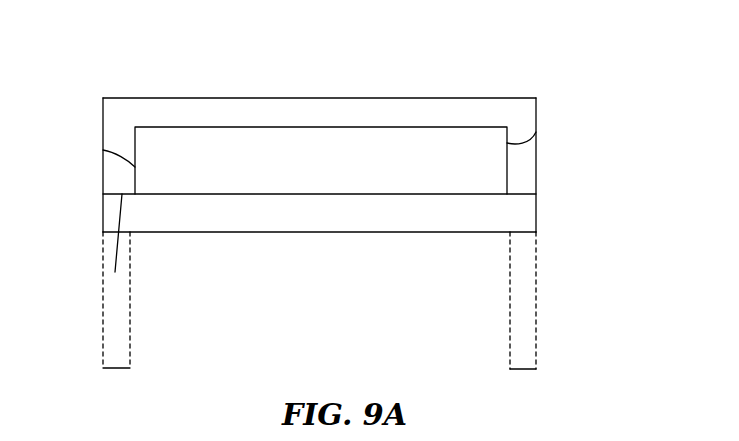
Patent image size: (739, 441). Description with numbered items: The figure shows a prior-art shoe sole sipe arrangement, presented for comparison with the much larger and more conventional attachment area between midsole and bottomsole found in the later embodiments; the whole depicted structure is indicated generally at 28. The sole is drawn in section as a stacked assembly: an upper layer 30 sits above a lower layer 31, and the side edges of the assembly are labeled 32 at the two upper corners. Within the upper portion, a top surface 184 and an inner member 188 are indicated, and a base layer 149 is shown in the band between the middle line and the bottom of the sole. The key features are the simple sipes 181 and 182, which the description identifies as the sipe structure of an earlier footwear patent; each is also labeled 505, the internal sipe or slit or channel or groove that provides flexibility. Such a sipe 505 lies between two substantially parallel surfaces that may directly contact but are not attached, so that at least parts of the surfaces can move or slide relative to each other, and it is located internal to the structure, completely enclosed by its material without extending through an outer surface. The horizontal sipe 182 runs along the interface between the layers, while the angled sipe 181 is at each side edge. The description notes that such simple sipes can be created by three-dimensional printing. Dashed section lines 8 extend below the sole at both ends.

The panel assembly 28 is at (574, 158).
The upper layer 30 is at (290, 98).
The lower layer 31 is at (245, 232).
The side edge 32 is at (103, 132).
The top surface 184 is at (157, 118).
The inner member 188 is at (446, 135).
The sipe 182 is at (352, 127).
The internal sipe 505 is at (314, 178).
The sipe 181 is at (103, 150).
The base layer 149 is at (518, 213).
The section line 8 is at (115, 272).